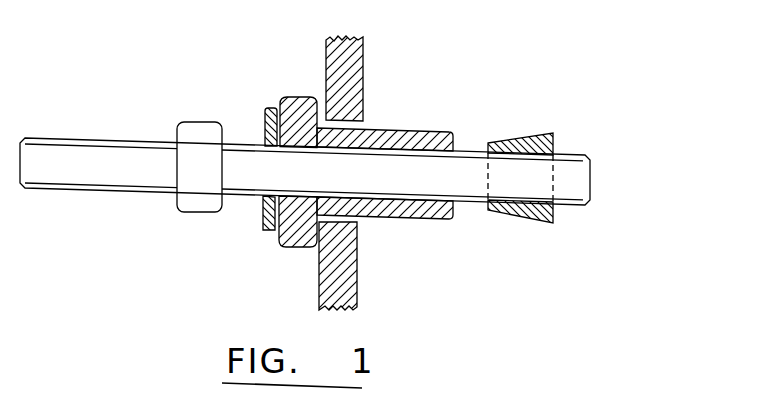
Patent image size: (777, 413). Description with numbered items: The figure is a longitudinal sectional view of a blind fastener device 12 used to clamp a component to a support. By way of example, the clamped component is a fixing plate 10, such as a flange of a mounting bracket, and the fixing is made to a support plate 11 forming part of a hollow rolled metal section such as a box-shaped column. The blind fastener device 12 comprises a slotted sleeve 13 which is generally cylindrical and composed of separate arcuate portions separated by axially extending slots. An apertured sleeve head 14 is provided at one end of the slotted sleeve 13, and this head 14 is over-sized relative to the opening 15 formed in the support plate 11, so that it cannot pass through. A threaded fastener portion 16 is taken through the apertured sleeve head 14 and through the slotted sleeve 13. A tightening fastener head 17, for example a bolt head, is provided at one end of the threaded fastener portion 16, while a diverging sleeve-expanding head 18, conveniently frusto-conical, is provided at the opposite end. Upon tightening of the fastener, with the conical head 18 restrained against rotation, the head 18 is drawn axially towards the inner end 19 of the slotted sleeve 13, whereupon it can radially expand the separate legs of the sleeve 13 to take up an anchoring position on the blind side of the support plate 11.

The fixing plate 10 is at (262, 113).
The support plate 11 is at (362, 62).
The blind fastener device 12 is at (422, 117).
The slotted sleeve 13 is at (446, 132).
The apertured sleeve head 14 is at (296, 100).
The opening 15 is at (352, 127).
The threaded fastener portion 16 is at (568, 167).
The tightening fastener head 17 is at (203, 132).
The sleeve-expanding head 18 is at (543, 134).
The inner end 19 is at (451, 211).